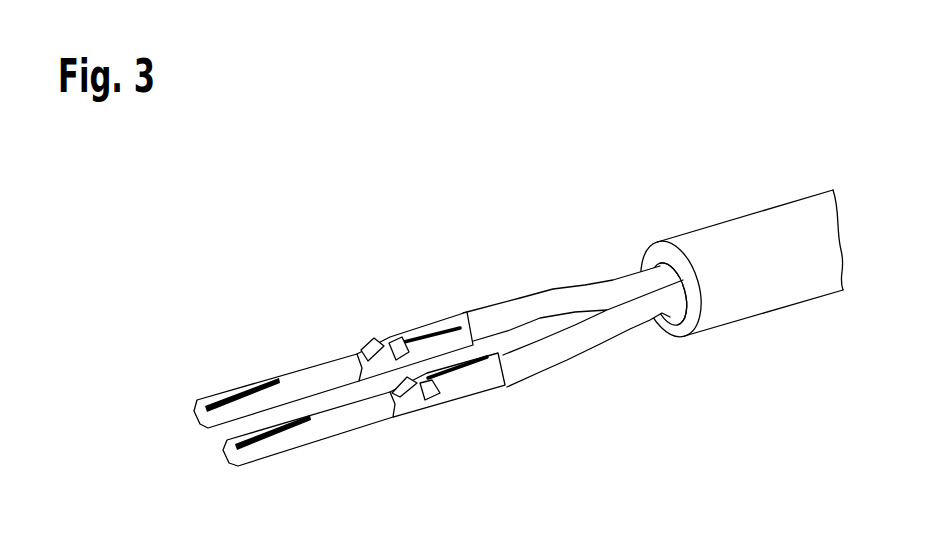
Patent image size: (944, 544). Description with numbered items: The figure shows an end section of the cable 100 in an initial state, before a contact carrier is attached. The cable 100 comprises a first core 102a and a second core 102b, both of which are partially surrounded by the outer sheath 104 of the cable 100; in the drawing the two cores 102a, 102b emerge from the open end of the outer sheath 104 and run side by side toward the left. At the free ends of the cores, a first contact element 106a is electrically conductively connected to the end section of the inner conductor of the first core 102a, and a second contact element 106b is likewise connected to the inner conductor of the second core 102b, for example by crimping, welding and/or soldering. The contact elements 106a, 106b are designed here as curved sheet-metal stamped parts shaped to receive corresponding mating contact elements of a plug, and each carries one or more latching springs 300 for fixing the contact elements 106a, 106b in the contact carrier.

The cable 100 is at (505, 204).
The outer sheath 104 is at (758, 208).
The first core 102a is at (612, 282).
The second core 102b is at (622, 340).
The first contact element 106a is at (307, 362).
The second contact element 106b is at (340, 420).
The latching spring 300 is at (334, 352).